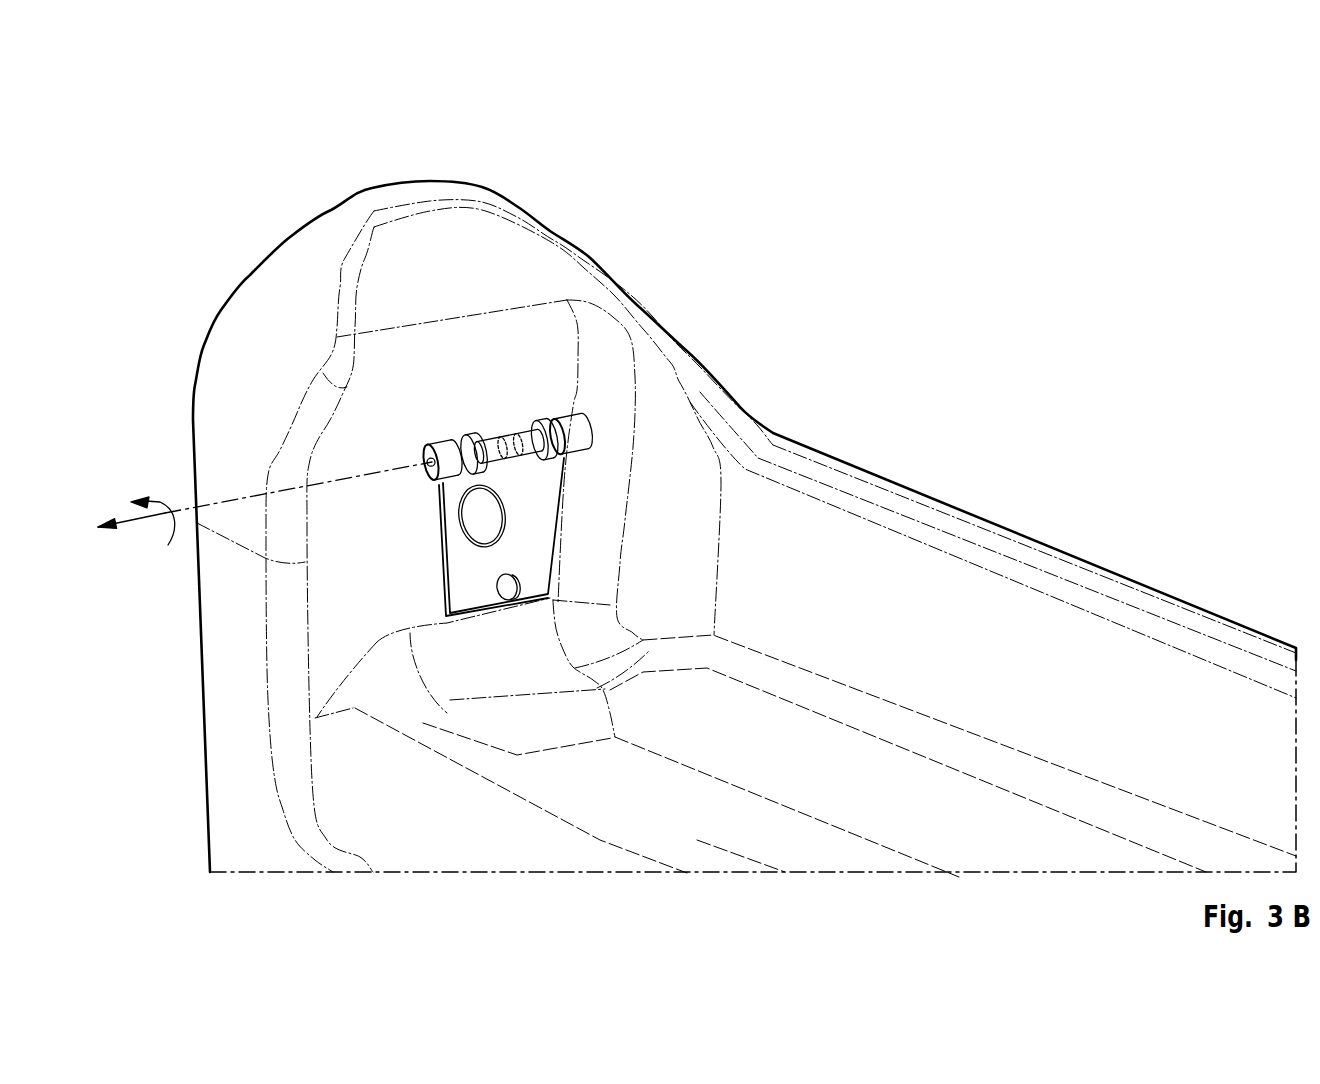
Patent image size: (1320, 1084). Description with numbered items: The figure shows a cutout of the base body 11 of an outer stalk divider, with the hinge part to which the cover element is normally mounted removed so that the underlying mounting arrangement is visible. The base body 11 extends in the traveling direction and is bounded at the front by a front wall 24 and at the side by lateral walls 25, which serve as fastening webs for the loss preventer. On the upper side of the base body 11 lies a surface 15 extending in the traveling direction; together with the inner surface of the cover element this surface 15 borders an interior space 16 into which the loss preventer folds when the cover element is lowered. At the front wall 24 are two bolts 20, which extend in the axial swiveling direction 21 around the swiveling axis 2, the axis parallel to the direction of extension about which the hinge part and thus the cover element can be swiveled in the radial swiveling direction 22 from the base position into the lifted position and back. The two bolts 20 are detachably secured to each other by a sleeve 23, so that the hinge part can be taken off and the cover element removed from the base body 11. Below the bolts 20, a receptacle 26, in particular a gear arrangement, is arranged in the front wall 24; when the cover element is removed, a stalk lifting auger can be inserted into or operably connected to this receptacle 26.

The swiveling axis 2 is at (248, 496).
The base body 11 is at (900, 358).
The surface 15 is at (744, 805).
The interior space 16 is at (885, 819).
The bolts 20 is at (468, 447).
The axial swiveling direction 21 is at (134, 523).
The radial swiveling direction 22 is at (158, 497).
The sleeve 23 is at (517, 437).
The front wall 24 is at (263, 282).
The lateral walls 25 is at (962, 538).
The receptacle 26 is at (472, 515).